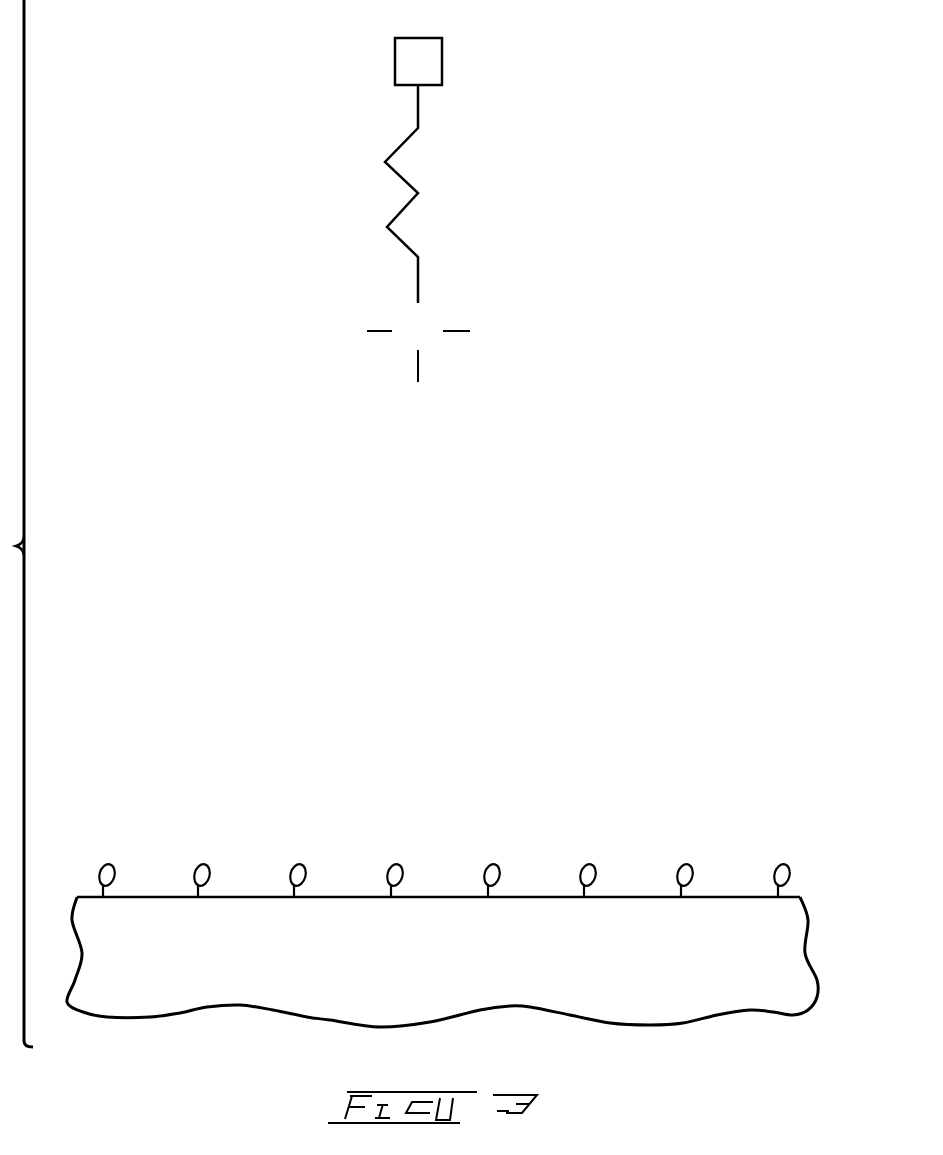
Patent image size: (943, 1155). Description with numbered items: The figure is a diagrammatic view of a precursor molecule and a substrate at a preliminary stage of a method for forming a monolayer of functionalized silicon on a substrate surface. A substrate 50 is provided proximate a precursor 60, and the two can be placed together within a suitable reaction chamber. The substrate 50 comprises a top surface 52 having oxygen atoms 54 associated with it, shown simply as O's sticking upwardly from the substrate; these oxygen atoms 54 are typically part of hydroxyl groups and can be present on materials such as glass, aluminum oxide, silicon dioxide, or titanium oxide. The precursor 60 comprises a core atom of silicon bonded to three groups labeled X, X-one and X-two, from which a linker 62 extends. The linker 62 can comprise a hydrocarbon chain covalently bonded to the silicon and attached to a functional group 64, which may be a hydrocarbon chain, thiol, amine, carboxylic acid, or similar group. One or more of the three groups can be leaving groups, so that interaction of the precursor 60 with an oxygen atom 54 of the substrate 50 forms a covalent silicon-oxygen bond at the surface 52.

The substrate 50 is at (764, 982).
The surface 52 is at (807, 892).
The oxygen atoms 54 is at (105, 865).
The precursor 60 is at (756, 83).
The linker 62 is at (433, 204).
The functional group 64 is at (436, 57).